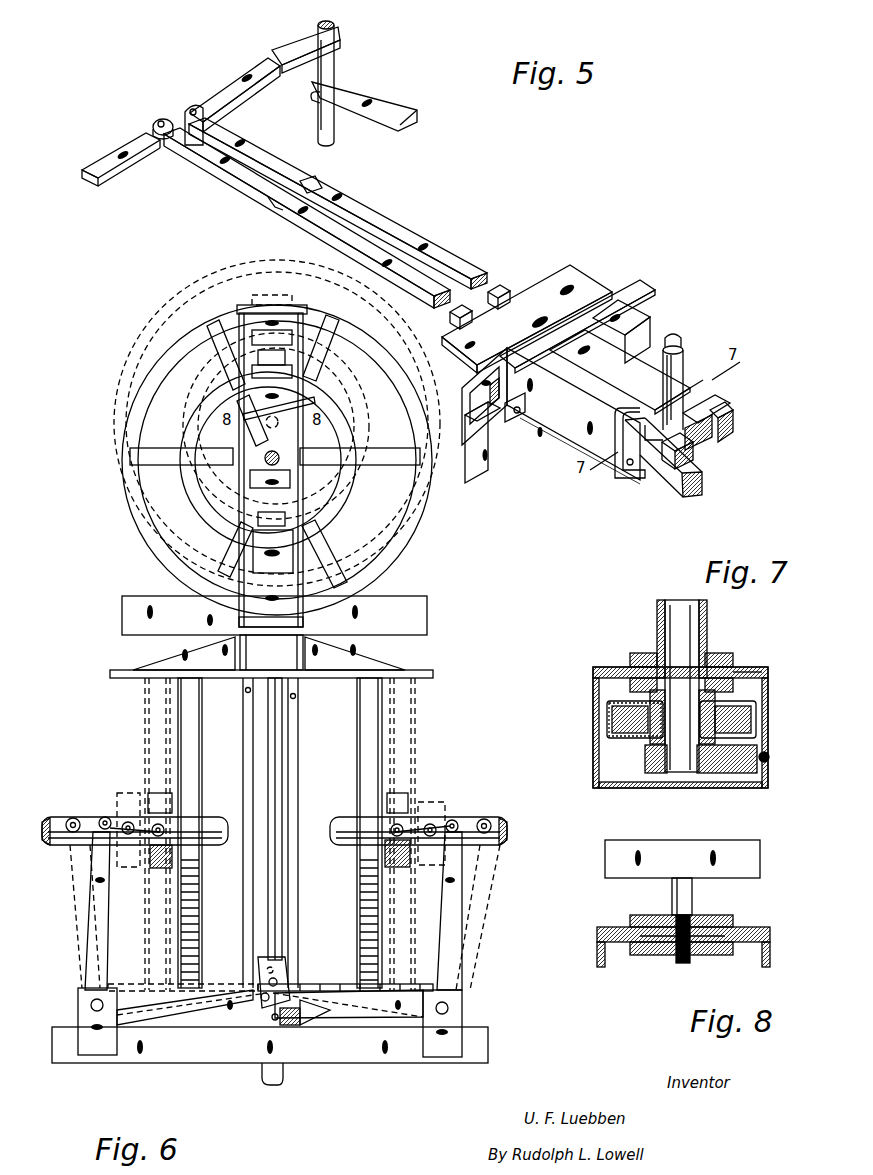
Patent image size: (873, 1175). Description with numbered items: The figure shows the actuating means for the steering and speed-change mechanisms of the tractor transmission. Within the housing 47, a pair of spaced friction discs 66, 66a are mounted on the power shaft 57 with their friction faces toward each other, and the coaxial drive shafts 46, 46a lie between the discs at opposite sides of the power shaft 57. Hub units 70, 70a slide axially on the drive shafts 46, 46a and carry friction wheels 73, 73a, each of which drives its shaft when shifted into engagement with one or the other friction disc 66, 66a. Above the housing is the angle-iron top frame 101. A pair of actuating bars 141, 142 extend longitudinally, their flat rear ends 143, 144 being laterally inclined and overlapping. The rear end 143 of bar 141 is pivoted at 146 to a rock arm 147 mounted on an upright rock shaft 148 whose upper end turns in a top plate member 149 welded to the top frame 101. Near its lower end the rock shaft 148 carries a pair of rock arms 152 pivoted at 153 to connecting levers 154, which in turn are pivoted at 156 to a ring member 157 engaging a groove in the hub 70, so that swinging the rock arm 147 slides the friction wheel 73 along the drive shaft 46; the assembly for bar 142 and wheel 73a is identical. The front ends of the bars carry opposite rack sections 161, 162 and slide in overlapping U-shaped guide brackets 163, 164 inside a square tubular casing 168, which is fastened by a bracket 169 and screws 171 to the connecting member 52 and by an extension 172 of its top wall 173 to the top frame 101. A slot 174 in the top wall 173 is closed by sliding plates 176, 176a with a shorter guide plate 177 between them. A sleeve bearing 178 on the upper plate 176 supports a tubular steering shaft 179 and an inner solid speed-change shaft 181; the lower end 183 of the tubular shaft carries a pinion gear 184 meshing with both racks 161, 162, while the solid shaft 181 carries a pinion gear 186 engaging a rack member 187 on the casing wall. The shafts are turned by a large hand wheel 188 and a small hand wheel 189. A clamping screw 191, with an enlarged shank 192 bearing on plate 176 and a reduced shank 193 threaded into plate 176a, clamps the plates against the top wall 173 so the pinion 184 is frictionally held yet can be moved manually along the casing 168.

In FIG. 6, the drive shaft 46 is at (53, 823).
In FIG. 6, the drive shaft 46a is at (493, 820).
In FIG. 5, the housing 47 is at (477, 468).
In FIG. 5, the connecting member 52 is at (627, 328).
In FIG. 6, the power shaft 57 is at (272, 1085).
In FIG. 6, the friction disc 66 is at (218, 983).
In FIG. 6, the friction disc 66a is at (410, 672).
In FIG. 6, the hub unit 70 is at (173, 807).
In FIG. 6, the hub unit 70a is at (383, 810).
In FIG. 6, the friction wheel 73 is at (190, 727).
In FIG. 6, the friction wheel 73a is at (368, 737).
In FIG. 5, the top frame 101 is at (593, 270).
In FIG. 6, the top frame 101 is at (405, 597).
In FIG. 5, the actuating bar 141 is at (368, 211).
In FIG. 6, the actuating bar 141 is at (247, 703).
In FIG. 5, the actuating bar 142 is at (298, 218).
In FIG. 6, the actuating bar 142 is at (298, 705).
In FIG. 5, the rear end 143 is at (190, 110).
In FIG. 6, the rear end 143 is at (267, 993).
In FIG. 5, the rear end 144 is at (193, 125).
In FIG. 6, the rear end 144 is at (280, 978).
In FIG. 5, the pivotal connection 146 is at (160, 120).
In FIG. 6, the pivotal connection 146 is at (275, 1013).
In FIG. 5, the rock arm 147 is at (107, 162).
In FIG. 6, the rock arm 147 is at (188, 1015).
In FIG. 5, the rock shaft 148 is at (336, 66).
In FIG. 6, the rock shaft 148 is at (90, 1004).
In FIG. 6, the top plate member 149 is at (85, 1017).
In FIG. 5, the rock arms 152 is at (383, 102).
In FIG. 6, the rock arms 152 is at (102, 898).
In FIG. 6, the pivot 153 is at (105, 818).
In FIG. 6, the connecting lever 154 is at (127, 820).
In FIG. 6, the pivot 156 is at (152, 826).
In FIG. 6, the ring member 157 is at (163, 798).
In FIG. 5, the rack section 161 is at (732, 418).
In FIG. 7, the rack section 161 is at (607, 710).
In FIG. 5, the rack section 162 is at (670, 463).
In FIG. 7, the rack section 162 is at (756, 722).
In FIG. 5, the U-shape guide bracket 163 is at (723, 403).
In FIG. 7, the U-shape guide bracket 163 is at (608, 730).
In FIG. 5, the U-shape guide bracket 164 is at (660, 437).
In FIG. 5, the tubular casing 168 is at (558, 413).
In FIG. 6, the tubular casing 168 is at (237, 436).
In FIG. 7, the tubular casing 168 is at (598, 782).
In FIG. 8, the tubular casing 168 is at (597, 953).
In FIG. 5, the bracket 169 is at (532, 420).
In FIG. 5, the screws 171 is at (513, 420).
In FIG. 5, the extension 172 is at (530, 305).
In FIG. 5, the top wall 173 is at (575, 324).
In FIG. 6, the top wall 173 is at (248, 338).
In FIG. 7, the top wall 173 is at (623, 668).
In FIG. 8, the top wall 173 is at (612, 930).
In FIG. 5, the slot 174 is at (703, 387).
In FIG. 6, the slot 174 is at (258, 360).
In FIG. 7, the slot 174 is at (766, 672).
In FIG. 8, the slot 174 is at (648, 948).
In FIG. 5, the sliding plate 176 is at (643, 312).
In FIG. 6, the sliding plate 176 is at (283, 478).
In FIG. 7, the sliding plate 176 is at (629, 657).
In FIG. 8, the sliding plate 176 is at (728, 920).
In FIG. 5, the sliding plate 176a is at (647, 453).
In FIG. 7, the sliding plate 176a is at (630, 684).
In FIG. 8, the sliding plate 176a is at (732, 950).
In FIG. 5, the guide plate 177 is at (607, 405).
In FIG. 7, the guide plate 177 is at (735, 660).
In FIG. 8, the guide plate 177 is at (700, 950).
In FIG. 5, the sleeve bearing 178 is at (662, 380).
In FIG. 6, the sleeve bearing 178 is at (262, 462).
In FIG. 7, the sleeve bearing 178 is at (695, 608).
In FIG. 5, the tubular shaft 179 is at (687, 365).
In FIG. 7, the tubular shaft 179 is at (690, 622).
In FIG. 5, the solid shaft 181 is at (673, 347).
In FIG. 7, the solid shaft 181 is at (706, 637).
In FIG. 7, the lower end 183 is at (680, 713).
In FIG. 5, the pinion gear 184 is at (707, 438).
In FIG. 7, the pinion gear 184 is at (757, 713).
In FIG. 7, the pinion gear 186 is at (645, 757).
In FIG. 5, the rack member 187 is at (693, 490).
In FIG. 7, the rack member 187 is at (738, 772).
In FIG. 6, the hand wheel 188 is at (80, 518).
In FIG. 6, the hand wheel 189 is at (350, 394).
In FIG. 6, the clamping screw 191 is at (275, 405).
In FIG. 8, the clamping screw 191 is at (672, 858).
In FIG. 8, the enlarged shank portion 192 is at (670, 893).
In FIG. 8, the reduced shank portion 193 is at (680, 962).